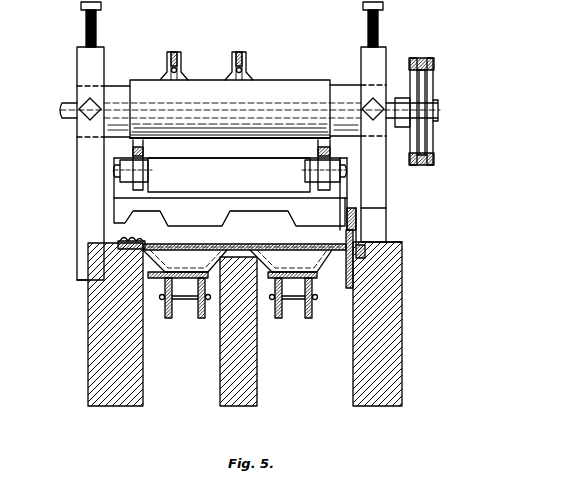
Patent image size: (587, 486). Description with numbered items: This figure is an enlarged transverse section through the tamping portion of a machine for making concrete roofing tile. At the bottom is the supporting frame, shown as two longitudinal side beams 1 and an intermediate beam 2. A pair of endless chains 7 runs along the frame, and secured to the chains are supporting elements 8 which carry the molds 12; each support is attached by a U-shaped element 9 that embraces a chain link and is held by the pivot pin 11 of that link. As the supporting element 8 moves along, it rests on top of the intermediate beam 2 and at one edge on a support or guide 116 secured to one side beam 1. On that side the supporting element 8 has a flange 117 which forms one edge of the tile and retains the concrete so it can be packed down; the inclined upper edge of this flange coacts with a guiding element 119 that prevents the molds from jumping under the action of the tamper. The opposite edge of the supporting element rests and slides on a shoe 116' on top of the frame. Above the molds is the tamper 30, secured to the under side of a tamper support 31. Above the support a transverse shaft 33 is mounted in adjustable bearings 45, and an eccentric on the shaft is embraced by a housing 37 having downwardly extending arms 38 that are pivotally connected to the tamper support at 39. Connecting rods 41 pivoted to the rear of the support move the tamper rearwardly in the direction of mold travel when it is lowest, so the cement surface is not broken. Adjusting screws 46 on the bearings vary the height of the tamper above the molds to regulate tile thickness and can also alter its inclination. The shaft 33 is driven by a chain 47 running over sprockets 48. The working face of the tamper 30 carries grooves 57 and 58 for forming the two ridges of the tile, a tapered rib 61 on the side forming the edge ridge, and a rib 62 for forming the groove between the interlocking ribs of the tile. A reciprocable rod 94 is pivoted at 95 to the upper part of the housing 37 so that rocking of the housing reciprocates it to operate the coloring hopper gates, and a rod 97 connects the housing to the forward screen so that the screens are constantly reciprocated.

The longitudinal side beam 1 is at (95, 343).
The intermediate beam 2 is at (220, 393).
The endless chain 7 is at (202, 318).
The supporting element 8 is at (402, 243).
The U-shaped element 9 is at (167, 318).
The pivot pin 11 is at (185, 300).
The mold 12 is at (180, 258).
The tamper 30 is at (230, 192).
The tamper support 31 is at (211, 192).
The transverse shaft 33 is at (62, 112).
The housing 37 is at (287, 80).
The arm 38 is at (143, 150).
The pivotal connection 39 is at (152, 172).
The connecting rod 41 is at (133, 150).
The adjustable bearing 45 is at (77, 138).
The adjusting screw 46 is at (96, 30).
The chain 47 is at (430, 165).
The sprocket 48 is at (425, 150).
The groove 57 is at (146, 218).
The groove 58 is at (259, 218).
The rib 61 is at (122, 241).
The rib 62 is at (347, 228).
The reciprocable rod 94 is at (178, 55).
The pivot 95 is at (184, 70).
The rod 97 is at (240, 52).
The support or guide 116 is at (342, 275).
The shoe 116' is at (59, 300).
The flange 117 is at (386, 226).
The guiding element 119 is at (386, 211).